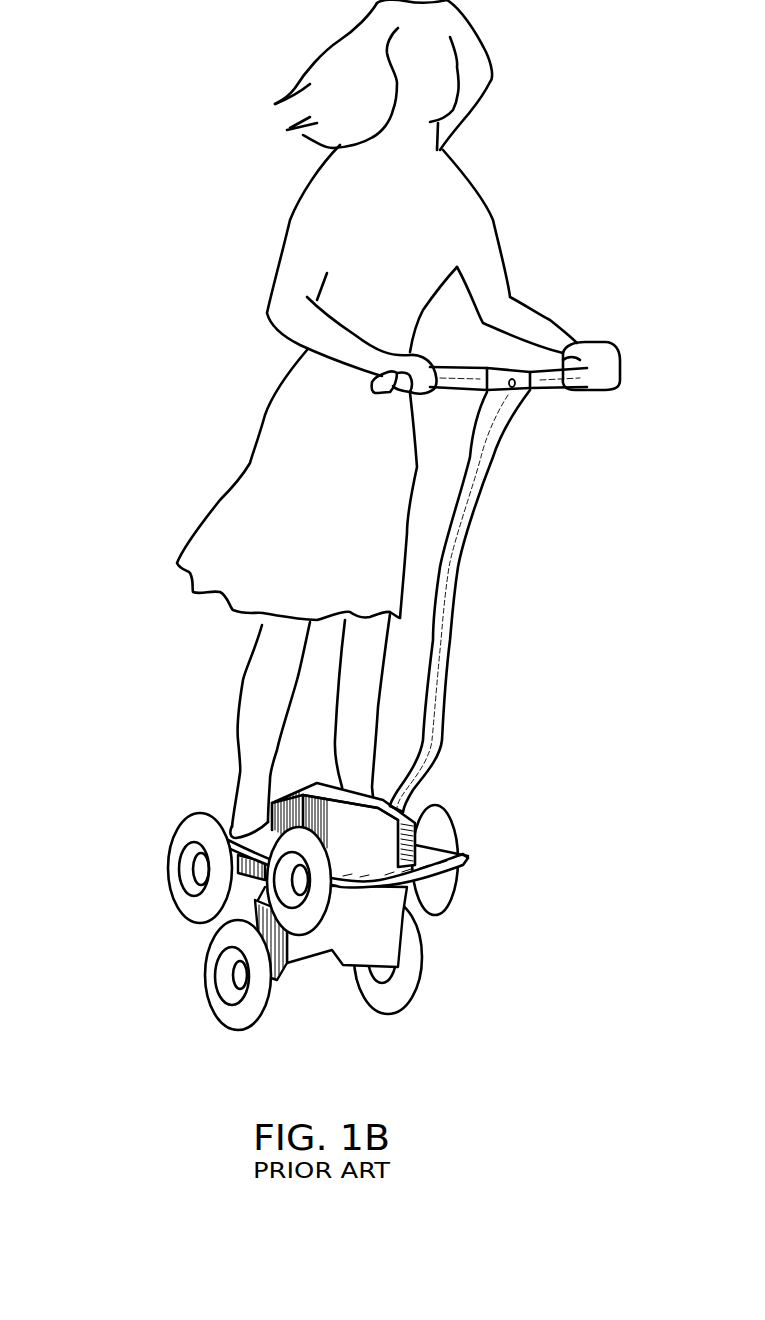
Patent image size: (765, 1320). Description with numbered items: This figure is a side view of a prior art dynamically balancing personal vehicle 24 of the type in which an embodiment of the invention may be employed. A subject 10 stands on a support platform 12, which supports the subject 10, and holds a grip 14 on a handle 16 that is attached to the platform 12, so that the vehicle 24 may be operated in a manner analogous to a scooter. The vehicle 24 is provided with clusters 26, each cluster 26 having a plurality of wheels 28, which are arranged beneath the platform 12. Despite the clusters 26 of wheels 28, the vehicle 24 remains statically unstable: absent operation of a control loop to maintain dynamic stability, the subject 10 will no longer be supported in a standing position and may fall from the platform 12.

The subject 10 is at (468, 182).
The support platform 12 is at (445, 877).
The grip 14 is at (542, 385).
The handle 16 is at (460, 568).
The personal vehicle 24 is at (334, 686).
The clusters 26 is at (484, 928).
The wheels 28 is at (178, 832).